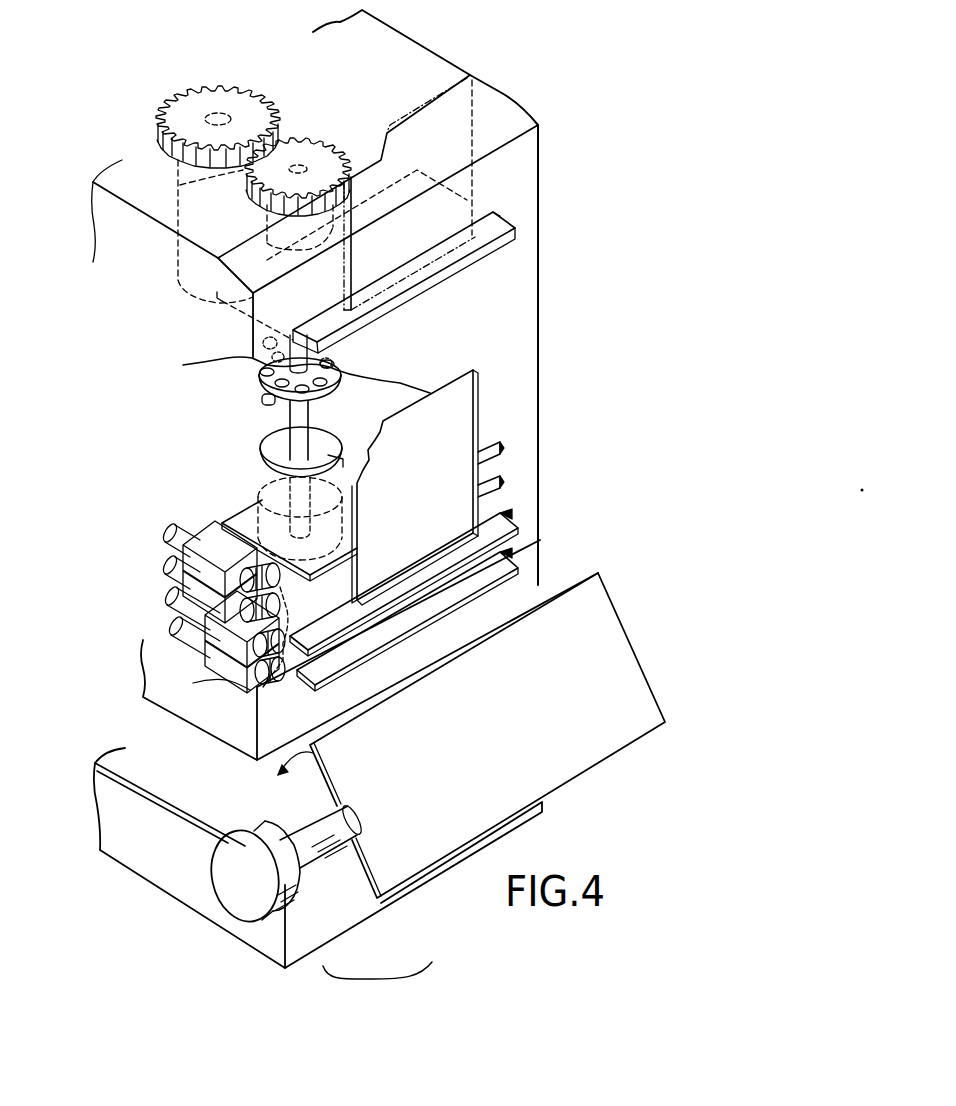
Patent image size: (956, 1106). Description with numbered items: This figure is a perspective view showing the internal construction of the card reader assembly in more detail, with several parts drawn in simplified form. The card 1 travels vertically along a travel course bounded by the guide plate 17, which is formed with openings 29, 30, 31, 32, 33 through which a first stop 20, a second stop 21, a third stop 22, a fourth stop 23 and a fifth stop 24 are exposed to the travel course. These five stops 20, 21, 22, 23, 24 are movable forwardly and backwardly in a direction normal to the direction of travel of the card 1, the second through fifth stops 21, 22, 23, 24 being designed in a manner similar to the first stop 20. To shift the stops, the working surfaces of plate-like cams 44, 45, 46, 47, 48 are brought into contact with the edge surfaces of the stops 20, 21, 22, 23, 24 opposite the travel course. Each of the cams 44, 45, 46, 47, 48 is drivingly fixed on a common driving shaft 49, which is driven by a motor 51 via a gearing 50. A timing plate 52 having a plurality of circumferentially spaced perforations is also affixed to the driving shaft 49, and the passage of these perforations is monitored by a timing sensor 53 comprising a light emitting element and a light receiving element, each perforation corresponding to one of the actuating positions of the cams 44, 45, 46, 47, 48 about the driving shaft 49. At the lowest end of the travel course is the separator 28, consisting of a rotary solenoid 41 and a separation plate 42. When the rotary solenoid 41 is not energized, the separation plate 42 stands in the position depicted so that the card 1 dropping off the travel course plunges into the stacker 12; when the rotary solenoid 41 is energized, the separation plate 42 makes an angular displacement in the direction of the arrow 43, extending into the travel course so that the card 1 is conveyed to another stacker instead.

The card 1 is at (450, 135).
The stacker 12 is at (130, 817).
The guide plate 17 is at (487, 331).
The first stop 20 is at (452, 257).
The second stop 21 is at (483, 462).
The third stop 22 is at (487, 497).
The fourth stop 23 is at (467, 552).
The fifth stop 24 is at (458, 585).
The separator 28 is at (377, 991).
The opening 29 is at (495, 211).
The opening 30 is at (504, 446).
The opening 31 is at (505, 481).
The opening 32 is at (512, 518).
The opening 33 is at (512, 555).
The rotary solenoid 41 is at (287, 883).
The separation plate 42 is at (408, 857).
The arrow 43 is at (318, 756).
The cam 44 is at (265, 208).
The cam 45 is at (282, 452).
The cam 46 is at (268, 487).
The cam 47 is at (222, 518).
The cam 48 is at (297, 690).
The driving shaft 49 is at (288, 417).
The gearing 50 is at (292, 140).
The motor 51 is at (190, 193).
The timing plate 52 is at (340, 380).
The timing sensor 53 is at (262, 398).